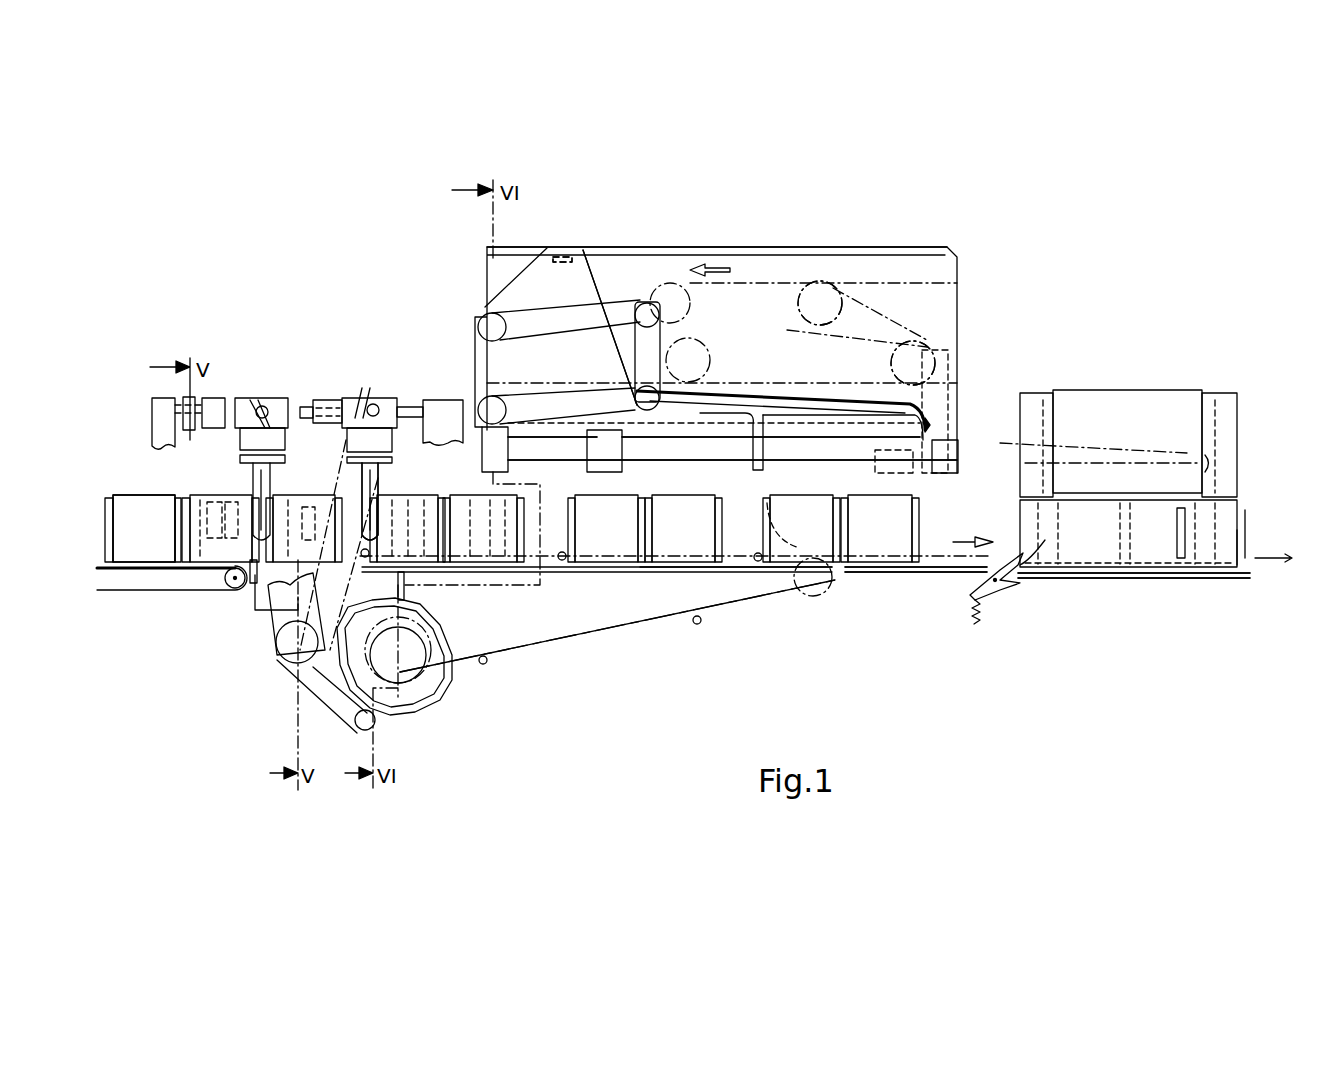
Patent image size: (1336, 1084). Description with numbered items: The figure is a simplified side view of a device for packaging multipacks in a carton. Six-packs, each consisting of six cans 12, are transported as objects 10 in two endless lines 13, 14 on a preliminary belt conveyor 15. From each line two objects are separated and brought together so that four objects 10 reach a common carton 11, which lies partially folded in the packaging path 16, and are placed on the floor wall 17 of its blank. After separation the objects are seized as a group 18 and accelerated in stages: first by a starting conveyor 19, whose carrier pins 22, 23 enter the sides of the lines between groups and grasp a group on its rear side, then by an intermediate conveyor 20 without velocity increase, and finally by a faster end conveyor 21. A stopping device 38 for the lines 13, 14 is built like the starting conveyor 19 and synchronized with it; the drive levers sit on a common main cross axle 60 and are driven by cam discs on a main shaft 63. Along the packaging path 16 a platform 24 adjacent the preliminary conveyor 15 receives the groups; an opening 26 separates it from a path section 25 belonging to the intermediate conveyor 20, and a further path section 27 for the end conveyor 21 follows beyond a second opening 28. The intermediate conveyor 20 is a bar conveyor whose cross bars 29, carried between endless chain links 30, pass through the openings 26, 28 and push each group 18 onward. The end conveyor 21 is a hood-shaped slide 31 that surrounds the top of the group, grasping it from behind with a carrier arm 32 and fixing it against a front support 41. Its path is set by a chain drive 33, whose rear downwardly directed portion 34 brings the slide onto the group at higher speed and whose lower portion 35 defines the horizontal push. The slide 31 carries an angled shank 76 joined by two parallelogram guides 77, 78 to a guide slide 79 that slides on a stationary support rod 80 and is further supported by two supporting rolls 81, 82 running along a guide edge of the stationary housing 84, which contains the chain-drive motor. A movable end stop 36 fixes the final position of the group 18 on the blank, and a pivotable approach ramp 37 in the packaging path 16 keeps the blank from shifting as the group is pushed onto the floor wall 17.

The objects 10 is at (600, 532).
The carton 11 is at (1160, 407).
The cans 12 is at (920, 572).
The endless line 13 is at (135, 486).
The endless line 14 is at (135, 497).
The preliminary belt conveyor 15 is at (163, 604).
The packaging path 16 is at (569, 585).
The floor wall 17 is at (1143, 577).
The group 18 is at (421, 467).
The starting conveyor 19 is at (370, 376).
The intermediate conveyor 20 is at (680, 638).
The end conveyor 21 is at (973, 308).
The carrier pin 22 is at (365, 490).
The carrier pin 23 is at (365, 490).
The platform 24 is at (298, 560).
The path section 25 is at (737, 570).
The opening 26 is at (403, 590).
The path section 27 is at (965, 572).
The opening 28 is at (830, 585).
The cross bar 29 is at (483, 665).
The endless chain link 30 is at (605, 638).
The slide 31 is at (857, 382).
The carrier arm 32 is at (758, 443).
The chain drive 33 is at (810, 273).
The downwardly directed portion 34 is at (673, 337).
The lower portion 35 is at (863, 380).
The end stop 36 is at (1237, 533).
The approach ramp 37 is at (960, 585).
The stopping device 38 is at (255, 376).
The support 41 is at (930, 423).
The main cross axle 60 is at (297, 640).
The main shaft 63 is at (398, 643).
The shank 76 is at (643, 360).
The parallelogram guide 77 is at (527, 320).
The parallelogram guide 78 is at (540, 400).
The guide slide 79 is at (522, 285).
The support rod 80 is at (667, 457).
The supporting roll 81 is at (570, 255).
The supporting roll 82 is at (570, 255).
The housing 84 is at (927, 267).